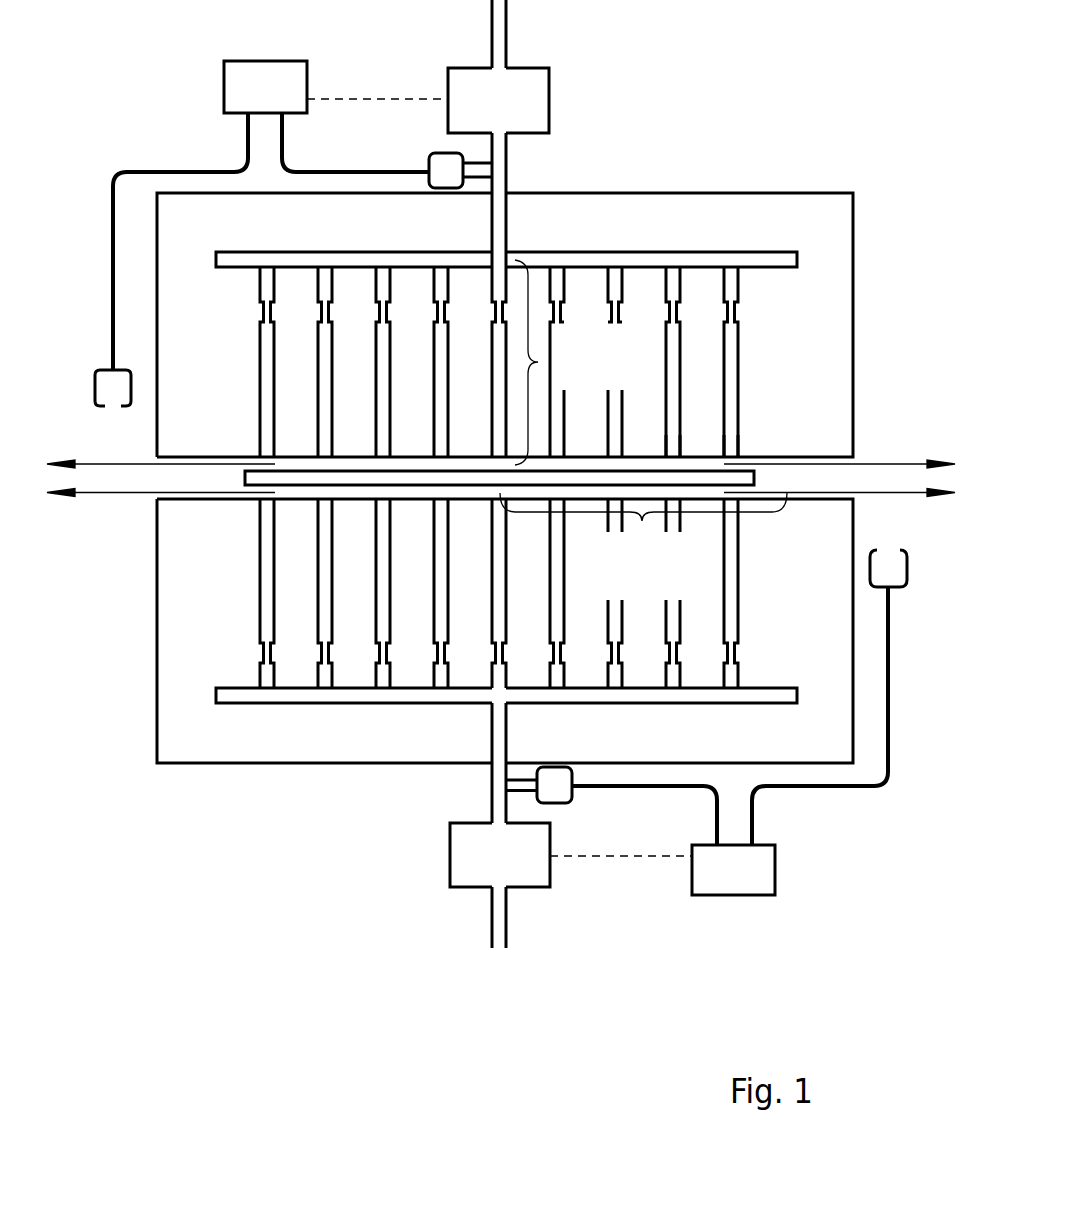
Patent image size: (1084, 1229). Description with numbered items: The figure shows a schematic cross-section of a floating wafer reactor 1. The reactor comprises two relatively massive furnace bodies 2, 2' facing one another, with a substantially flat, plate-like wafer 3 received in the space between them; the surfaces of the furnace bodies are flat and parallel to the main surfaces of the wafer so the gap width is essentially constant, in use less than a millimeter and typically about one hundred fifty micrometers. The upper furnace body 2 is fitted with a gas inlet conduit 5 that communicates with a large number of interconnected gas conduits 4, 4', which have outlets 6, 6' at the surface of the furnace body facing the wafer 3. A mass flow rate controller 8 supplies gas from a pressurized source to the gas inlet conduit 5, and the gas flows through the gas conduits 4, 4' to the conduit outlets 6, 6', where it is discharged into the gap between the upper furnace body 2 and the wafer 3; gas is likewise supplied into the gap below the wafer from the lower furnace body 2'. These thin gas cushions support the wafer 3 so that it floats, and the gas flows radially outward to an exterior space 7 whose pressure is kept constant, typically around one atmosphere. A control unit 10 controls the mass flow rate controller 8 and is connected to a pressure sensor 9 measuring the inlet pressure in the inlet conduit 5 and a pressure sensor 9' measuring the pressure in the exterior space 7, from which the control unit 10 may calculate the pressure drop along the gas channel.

The floating wafer reactor 1 is at (216, 840).
The upper furnace body 2 is at (557, 329).
The lower furnace body 2' is at (505, 628).
The wafer 3 is at (251, 477).
The gas conduit 4 is at (838, 361).
The gas conduit 4' is at (812, 327).
The gas inlet conduit 5 is at (500, 196).
The conduit outlet 6 is at (838, 432).
The conduit outlet 6' is at (812, 406).
The exterior space 7 is at (74, 442).
The mass flow rate controller 8 is at (499, 477).
The pressure sensor 9 is at (573, 499).
The pressure sensor 9' is at (171, 259).
The control unit 10 is at (499, 478).